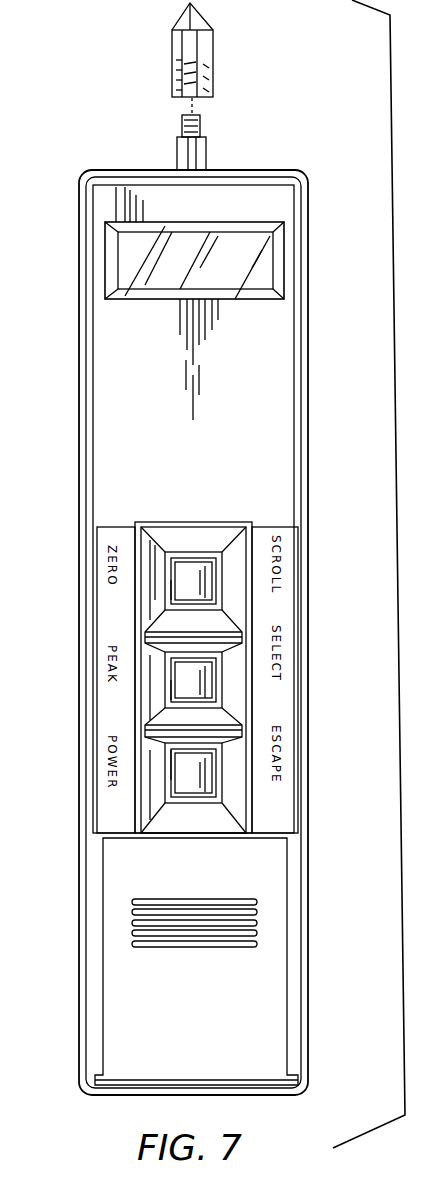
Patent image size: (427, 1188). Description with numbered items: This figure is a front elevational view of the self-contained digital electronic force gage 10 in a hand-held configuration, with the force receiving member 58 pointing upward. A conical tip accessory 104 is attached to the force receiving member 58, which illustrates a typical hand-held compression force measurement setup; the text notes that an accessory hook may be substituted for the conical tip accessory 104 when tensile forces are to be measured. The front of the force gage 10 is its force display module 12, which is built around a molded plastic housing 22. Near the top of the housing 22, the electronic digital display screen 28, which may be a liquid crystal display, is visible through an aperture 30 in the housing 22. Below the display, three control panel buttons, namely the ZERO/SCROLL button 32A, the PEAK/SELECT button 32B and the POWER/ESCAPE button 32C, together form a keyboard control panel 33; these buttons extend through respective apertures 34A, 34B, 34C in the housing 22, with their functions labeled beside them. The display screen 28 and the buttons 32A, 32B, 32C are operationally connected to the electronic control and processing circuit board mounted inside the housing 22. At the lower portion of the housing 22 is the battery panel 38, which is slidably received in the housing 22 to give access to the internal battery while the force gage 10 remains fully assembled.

The digital electronic force gage 10 is at (320, 428).
The force display module 12 is at (270, 480).
The housing 22 is at (120, 370).
The electronic digital display screen 28 is at (170, 272).
The aperture 30 is at (118, 250).
The ZERO/SCROLL button 32A is at (193, 575).
The PEAK/SELECT button 32B is at (205, 683).
The POWER/ESCAPE button 32C is at (200, 795).
The keyboard control panel 33 is at (150, 552).
The aperture 34A is at (176, 592).
The aperture 34B is at (180, 678).
The aperture 34C is at (172, 772).
The battery panel 38 is at (216, 1038).
The force receiving member 58 is at (206, 152).
The conical tip accessory 104 is at (213, 52).